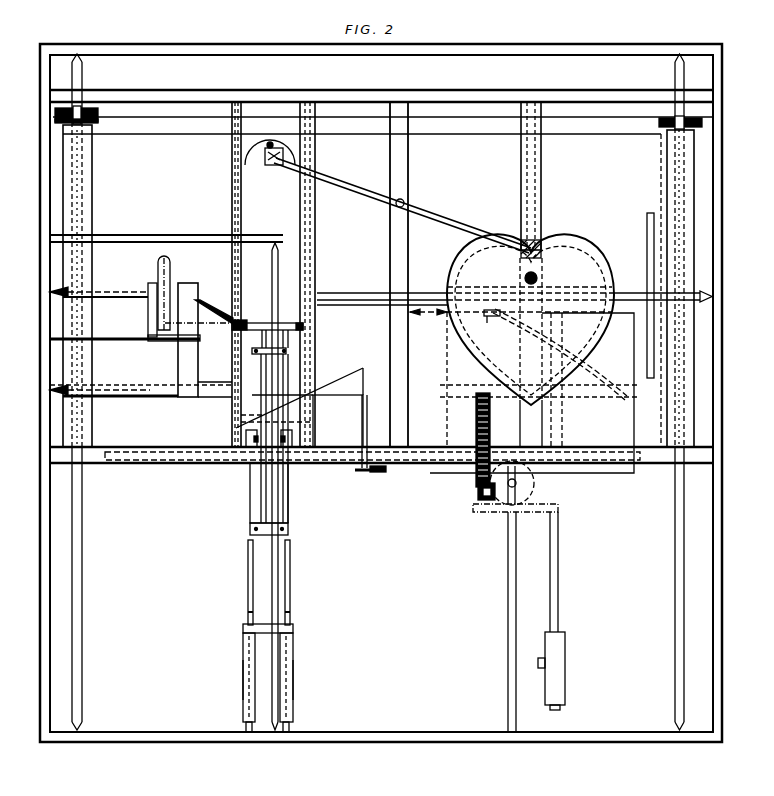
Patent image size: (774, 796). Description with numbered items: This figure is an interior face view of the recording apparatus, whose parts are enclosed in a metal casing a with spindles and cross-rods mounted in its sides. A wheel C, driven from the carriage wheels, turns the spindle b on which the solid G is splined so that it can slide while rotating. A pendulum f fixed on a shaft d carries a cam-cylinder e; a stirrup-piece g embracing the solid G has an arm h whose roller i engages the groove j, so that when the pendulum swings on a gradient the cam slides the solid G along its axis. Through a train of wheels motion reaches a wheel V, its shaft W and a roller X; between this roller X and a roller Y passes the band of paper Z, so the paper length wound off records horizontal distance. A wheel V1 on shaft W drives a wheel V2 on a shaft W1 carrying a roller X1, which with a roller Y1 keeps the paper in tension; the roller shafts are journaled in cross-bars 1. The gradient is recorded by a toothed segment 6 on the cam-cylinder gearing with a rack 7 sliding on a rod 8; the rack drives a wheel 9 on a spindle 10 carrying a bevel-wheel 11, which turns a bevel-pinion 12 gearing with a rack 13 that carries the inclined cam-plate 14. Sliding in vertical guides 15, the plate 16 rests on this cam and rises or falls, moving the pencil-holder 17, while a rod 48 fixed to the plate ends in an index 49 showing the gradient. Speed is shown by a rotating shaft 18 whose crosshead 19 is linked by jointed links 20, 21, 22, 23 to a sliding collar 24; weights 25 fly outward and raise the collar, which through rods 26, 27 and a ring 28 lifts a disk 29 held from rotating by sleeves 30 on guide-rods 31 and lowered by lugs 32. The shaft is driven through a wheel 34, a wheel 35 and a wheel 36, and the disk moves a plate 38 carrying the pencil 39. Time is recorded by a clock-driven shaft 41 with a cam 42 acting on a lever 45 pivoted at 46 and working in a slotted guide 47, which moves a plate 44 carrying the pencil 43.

The cross-bars 1 is at (376, 101).
The toothed segment 6 is at (476, 421).
The rack 7 is at (478, 497).
The rod or way 8 is at (478, 490).
The wheel 9 is at (520, 482).
The spindle 10 is at (508, 591).
The bevel-wheel 11 is at (476, 512).
The bevel-pinion 12 is at (504, 498).
The rack 13 is at (300, 386).
The cam-plate 14 is at (307, 421).
The vertical guides 15 is at (233, 188).
The vertically-sliding plate 16 is at (250, 420).
The pencil-holder 17 is at (262, 388).
The rotating shaft 18 is at (279, 278).
The crosshead 19 is at (252, 352).
The jointed link 20 is at (210, 395).
The jointed link 21 is at (282, 422).
The jointed link 22 is at (260, 513).
The jointed link 23 is at (289, 513).
The sliding collar 24 is at (250, 530).
The weights 25 is at (250, 447).
The rod 26 is at (262, 581).
The rod 27 is at (275, 582).
The ring 28 is at (292, 634).
The disk 29 is at (244, 634).
The sleeves 30 is at (244, 691).
The guide-rods 31 is at (249, 612).
The lugs 32 is at (245, 626).
The wheel 34 is at (158, 266).
The wheel 35 is at (222, 326).
The wheel 36 is at (304, 327).
The plate 38 is at (285, 330).
The pencil 39 is at (264, 330).
The shaft 41 is at (524, 278).
The cam 42 is at (530, 340).
The pencil 43 is at (273, 146).
The plate 44 is at (246, 153).
The lever 45 is at (458, 230).
The pivot 46 is at (404, 201).
The slotted guide 47 is at (541, 177).
The rod 48 is at (368, 440).
The index 49 is at (373, 473).
The casing a is at (541, 53).
The spindle b is at (346, 293).
The wheel C is at (647, 237).
The shaft d is at (430, 395).
The cam-cylinder e is at (532, 393).
The pendulum f is at (559, 557).
The stirrup-piece g is at (178, 366).
The solid G is at (205, 340).
The arm h is at (372, 312).
The roller i is at (488, 318).
The groove j is at (606, 372).
The wheel V is at (56, 112).
The wheel V1 is at (56, 120).
The wheel V2 is at (703, 122).
The shaft W is at (83, 72).
The shaft W1 is at (676, 75).
The roller X is at (62, 163).
The roller X1 is at (695, 160).
The roller Y is at (78, 192).
The roller Y1 is at (680, 180).
The band of paper Z is at (174, 134).